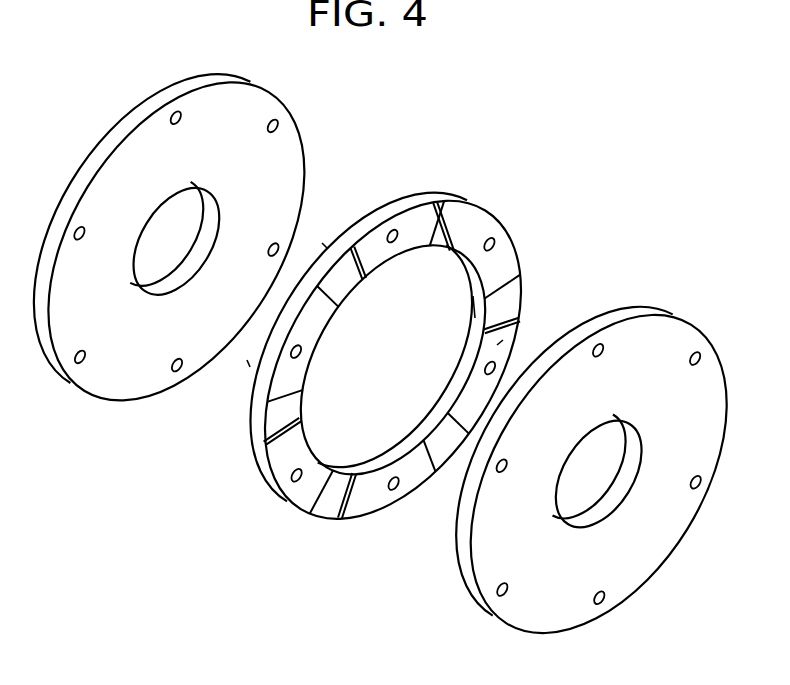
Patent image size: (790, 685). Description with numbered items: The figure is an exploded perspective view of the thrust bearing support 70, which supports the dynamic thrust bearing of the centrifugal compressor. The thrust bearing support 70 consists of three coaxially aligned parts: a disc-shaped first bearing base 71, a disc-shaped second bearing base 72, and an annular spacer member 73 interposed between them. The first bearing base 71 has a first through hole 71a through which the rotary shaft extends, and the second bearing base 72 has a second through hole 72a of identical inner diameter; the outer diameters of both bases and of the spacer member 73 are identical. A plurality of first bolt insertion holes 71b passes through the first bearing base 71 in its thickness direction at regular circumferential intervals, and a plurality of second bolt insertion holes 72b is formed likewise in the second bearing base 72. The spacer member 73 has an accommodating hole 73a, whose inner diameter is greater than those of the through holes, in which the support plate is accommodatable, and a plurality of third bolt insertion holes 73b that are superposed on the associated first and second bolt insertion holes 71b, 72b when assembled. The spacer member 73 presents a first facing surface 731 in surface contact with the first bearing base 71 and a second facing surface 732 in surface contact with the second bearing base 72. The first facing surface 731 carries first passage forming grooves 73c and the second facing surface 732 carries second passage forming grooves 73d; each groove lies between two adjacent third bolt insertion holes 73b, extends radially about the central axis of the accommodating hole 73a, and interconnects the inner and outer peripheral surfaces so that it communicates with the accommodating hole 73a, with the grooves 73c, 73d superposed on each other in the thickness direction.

The thrust bearing support 70 is at (549, 161).
The first bearing base 71 is at (620, 310).
The first through hole 71a is at (572, 466).
The first bolt insertion holes 71b is at (603, 358).
The second bearing base 72 is at (95, 165).
The second through hole 72a is at (148, 230).
The second bolt insertion holes 72b is at (176, 125).
The spacer member 73 is at (402, 198).
The accommodating hole 73a is at (363, 237).
The third bolt insertion holes 73b is at (496, 245).
The first passage forming grooves 73c is at (460, 217).
The second passage forming grooves 73d is at (322, 243).
The first facing surface 731 is at (503, 340).
The second facing surface 732 is at (247, 360).